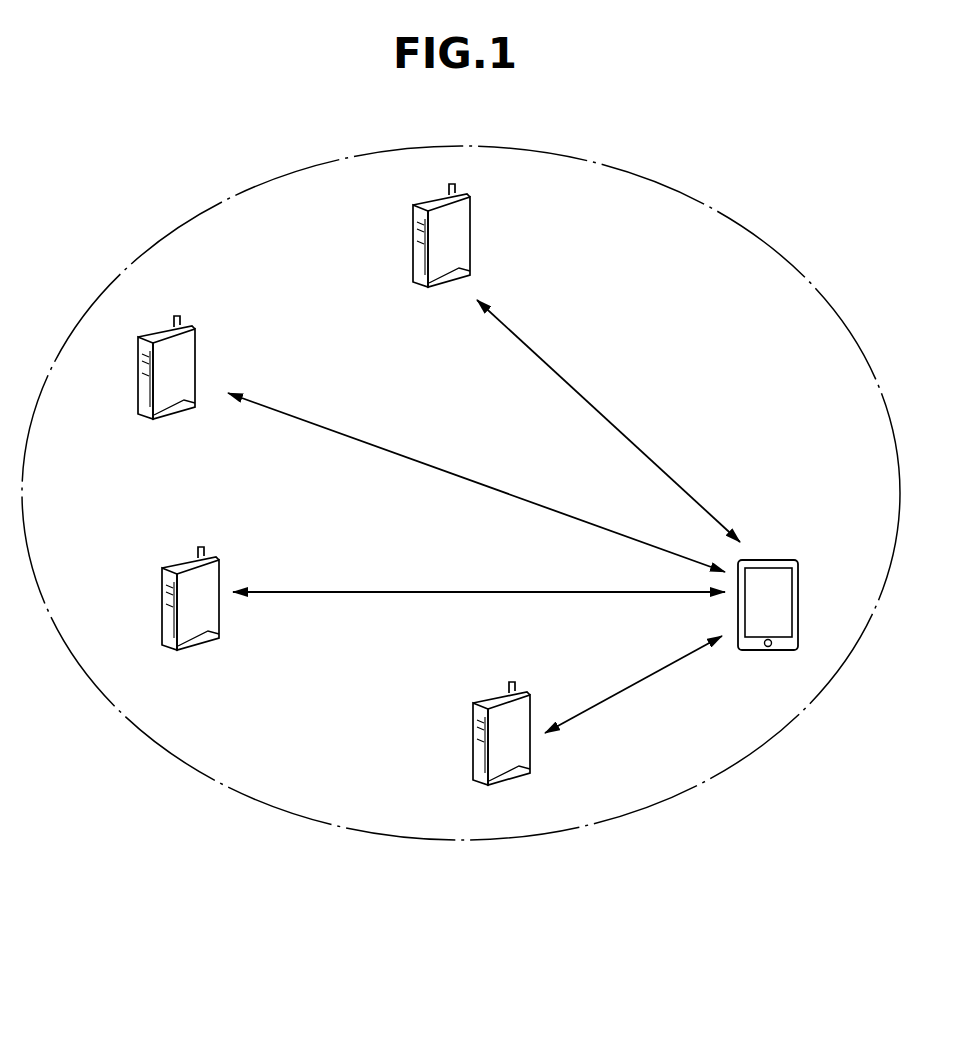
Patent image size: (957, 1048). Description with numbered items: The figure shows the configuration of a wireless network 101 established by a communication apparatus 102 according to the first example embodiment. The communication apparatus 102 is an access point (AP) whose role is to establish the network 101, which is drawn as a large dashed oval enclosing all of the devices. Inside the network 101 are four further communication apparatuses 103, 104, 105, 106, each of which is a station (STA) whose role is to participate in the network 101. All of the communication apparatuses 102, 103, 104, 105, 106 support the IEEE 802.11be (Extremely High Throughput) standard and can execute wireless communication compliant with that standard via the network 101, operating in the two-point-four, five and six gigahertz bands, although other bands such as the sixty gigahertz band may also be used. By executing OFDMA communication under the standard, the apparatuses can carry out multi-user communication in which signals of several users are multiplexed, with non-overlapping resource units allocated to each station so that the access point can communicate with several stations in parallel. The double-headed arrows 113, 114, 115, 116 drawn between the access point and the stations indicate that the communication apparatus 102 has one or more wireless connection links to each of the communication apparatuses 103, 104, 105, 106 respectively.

The network 101 is at (421, 840).
The communication apparatus 102 is at (772, 560).
The communication apparatus 103 is at (470, 232).
The communication apparatus 104 is at (196, 345).
The communication apparatus 105 is at (162, 606).
The communication apparatus 106 is at (473, 743).
The arrow 113 is at (572, 392).
The arrow 114 is at (437, 468).
The arrow 115 is at (384, 592).
The arrow 116 is at (637, 683).